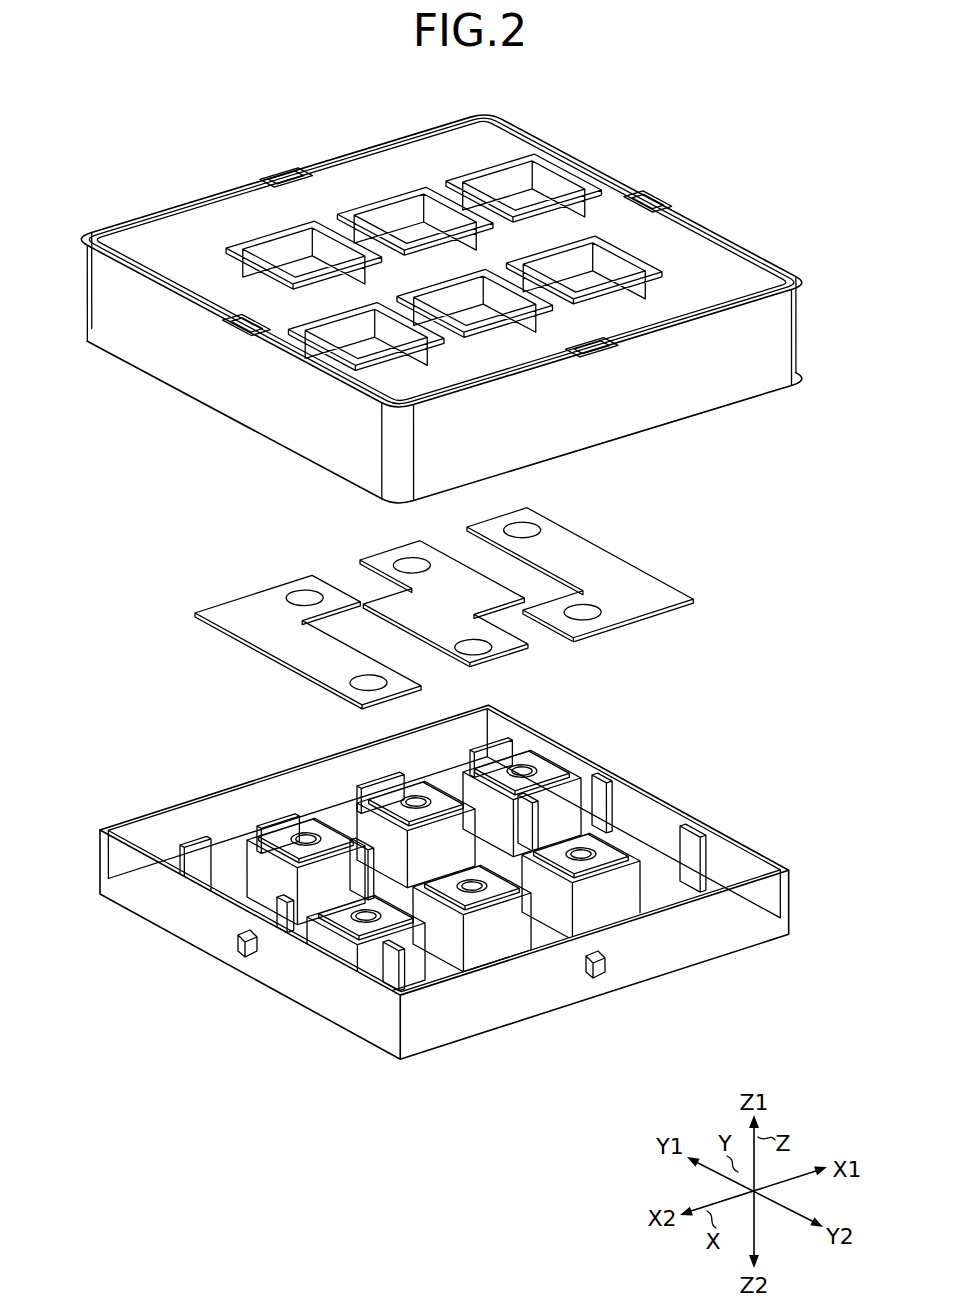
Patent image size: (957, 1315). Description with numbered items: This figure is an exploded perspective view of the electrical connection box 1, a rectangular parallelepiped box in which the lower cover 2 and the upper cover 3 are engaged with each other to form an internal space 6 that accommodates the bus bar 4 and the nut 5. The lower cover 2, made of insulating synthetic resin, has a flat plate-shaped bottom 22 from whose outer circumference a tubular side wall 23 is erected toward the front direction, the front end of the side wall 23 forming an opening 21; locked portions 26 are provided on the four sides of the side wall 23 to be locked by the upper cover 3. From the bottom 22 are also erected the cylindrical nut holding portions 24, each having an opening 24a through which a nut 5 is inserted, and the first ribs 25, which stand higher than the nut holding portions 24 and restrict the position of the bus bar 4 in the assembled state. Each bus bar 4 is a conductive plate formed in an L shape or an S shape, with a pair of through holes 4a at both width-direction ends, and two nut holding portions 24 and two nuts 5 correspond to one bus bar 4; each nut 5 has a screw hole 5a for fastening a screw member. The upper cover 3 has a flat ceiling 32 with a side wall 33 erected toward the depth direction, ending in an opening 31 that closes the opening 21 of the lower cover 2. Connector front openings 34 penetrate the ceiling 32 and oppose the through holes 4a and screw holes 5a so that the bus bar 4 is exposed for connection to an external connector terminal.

The electrical connection box 1 is at (462, 584).
The lower cover 2 is at (445, 892).
The upper cover 3 is at (462, 285).
The bus bar 4 is at (275, 640).
The through hole 4a is at (366, 681).
The nut 5 is at (418, 801).
The screw hole 5a is at (305, 843).
The internal space 6 is at (428, 589).
The opening 21 is at (725, 840).
The bottom 22 is at (655, 860).
The side wall 23 is at (478, 1013).
The nut holding portion 24 is at (262, 866).
The opening 24a is at (255, 848).
The first rib 25 is at (283, 905).
The locked portion 26 is at (244, 957).
The opening 31 is at (745, 398).
The ceiling 32 is at (710, 255).
The side wall 33 is at (690, 390).
The connector front opening 34 is at (560, 170).